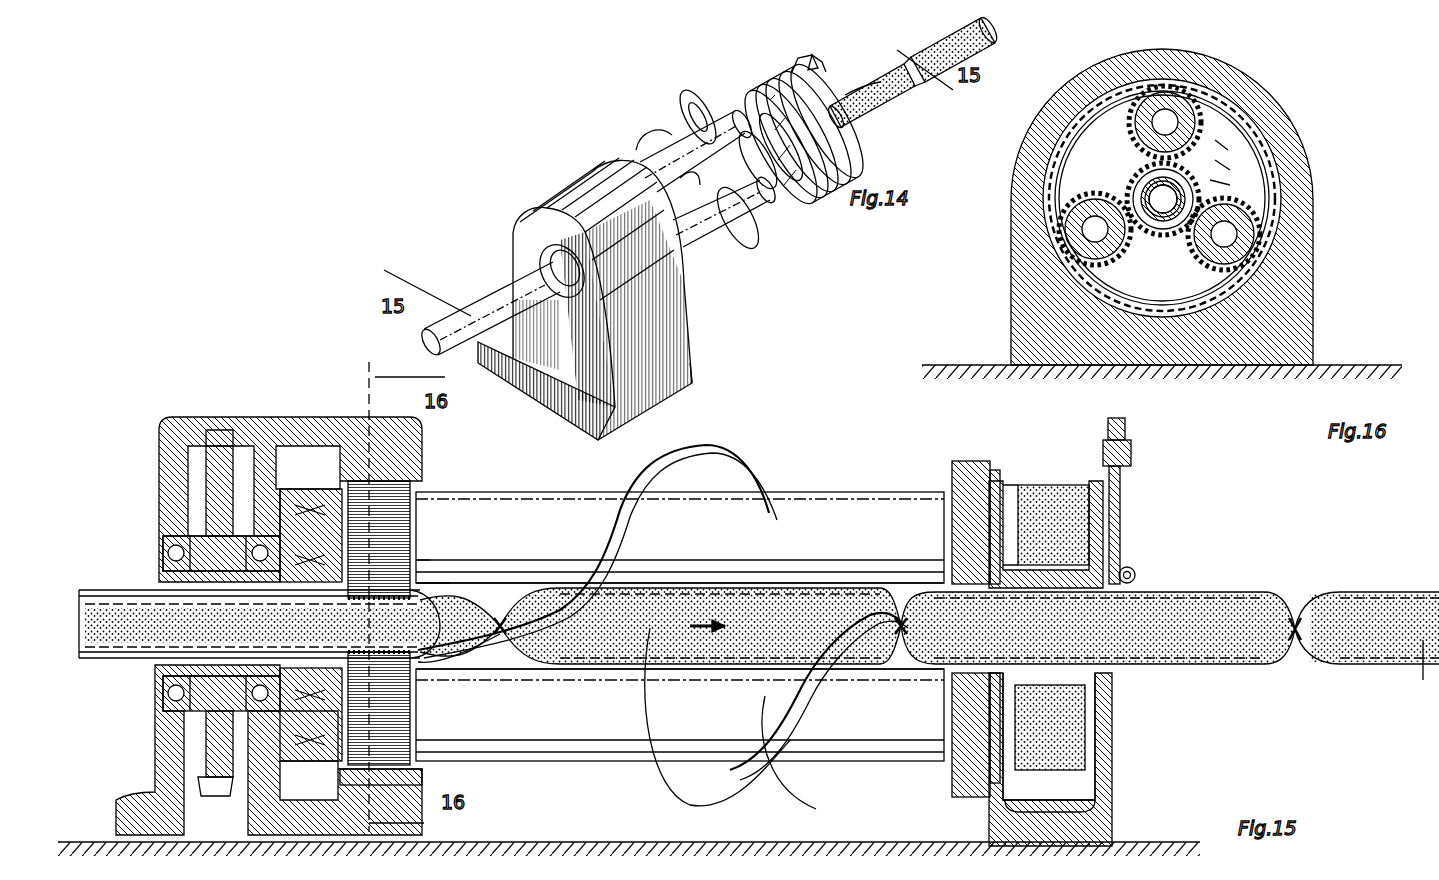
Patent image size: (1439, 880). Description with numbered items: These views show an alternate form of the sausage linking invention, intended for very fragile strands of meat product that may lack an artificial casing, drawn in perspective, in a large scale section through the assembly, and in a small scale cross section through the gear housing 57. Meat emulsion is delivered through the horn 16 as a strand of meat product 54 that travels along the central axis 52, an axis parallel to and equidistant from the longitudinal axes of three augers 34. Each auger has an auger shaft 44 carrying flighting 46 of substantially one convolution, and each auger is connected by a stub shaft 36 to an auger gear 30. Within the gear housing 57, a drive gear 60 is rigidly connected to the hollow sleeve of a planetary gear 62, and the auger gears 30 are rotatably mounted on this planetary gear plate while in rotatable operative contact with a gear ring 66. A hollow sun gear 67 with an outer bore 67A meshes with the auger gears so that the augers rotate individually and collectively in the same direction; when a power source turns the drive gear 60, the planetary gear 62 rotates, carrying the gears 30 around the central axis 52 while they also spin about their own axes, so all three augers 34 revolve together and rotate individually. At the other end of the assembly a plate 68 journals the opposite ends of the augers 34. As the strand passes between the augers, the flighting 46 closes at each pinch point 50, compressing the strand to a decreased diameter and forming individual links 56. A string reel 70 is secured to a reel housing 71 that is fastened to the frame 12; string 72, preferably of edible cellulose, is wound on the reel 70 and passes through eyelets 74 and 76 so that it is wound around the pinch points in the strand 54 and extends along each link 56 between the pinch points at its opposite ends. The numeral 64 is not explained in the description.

In FIG. 16, the frame 12 is at (1358, 365).
In FIG. 15, the frame 12 is at (1190, 842).
In FIG. 14, the horn 16 is at (520, 298).
In FIG. 16, the horn 16 is at (1190, 240).
In FIG. 15, the horn 16 is at (120, 610).
In FIG. 16, the auger gears 30 is at (1025, 140).
In FIG. 15, the auger gears 30 is at (410, 530).
In FIG. 14, the augers 34 is at (668, 103).
In FIG. 15, the augers 34 is at (868, 505).
In FIG. 16, the stub shaft 36 is at (1150, 100).
In FIG. 14, the auger shaft 44 is at (742, 225).
In FIG. 15, the auger shaft 44 is at (740, 480).
In FIG. 14, the flighting 46 is at (728, 245).
In FIG. 15, the flighting 46 is at (745, 500).
In FIG. 14, the pinch point 50 is at (935, 72).
In FIG. 15, the pinch point 50 is at (1340, 600).
In FIG. 15, the central axis 52 is at (582, 772).
In FIG. 14, the strand of meat product 54 is at (868, 100).
In FIG. 15, the strand of meat product 54 is at (470, 700).
In FIG. 15, the links 56 is at (1290, 605).
In FIG. 14, the gear housing 57 is at (522, 231).
In FIG. 16, the gear housing 57 is at (1296, 113).
In FIG. 15, the gear housing 57 is at (205, 418).
In FIG. 15, the drive gear 60 is at (160, 420).
In FIG. 16, the planetary gear 62 is at (1250, 152).
In FIG. 15, the planetary gear 62 is at (300, 489).
In FIG. 14, the bearing 64 is at (533, 250).
In FIG. 15, the bearing 64 is at (163, 590).
In FIG. 16, the gear ring 66 is at (1245, 112).
In FIG. 15, the gear ring 66 is at (390, 505).
In FIG. 16, the hollow sun gear 67 is at (1248, 167).
In FIG. 15, the hollow sun gear 67 is at (430, 560).
In FIG. 16, the outer bore 67A is at (1252, 178).
In FIG. 15, the outer bore 67A is at (450, 585).
In FIG. 14, the plate 68 is at (694, 108).
In FIG. 15, the plate 68 is at (978, 480).
In FIG. 14, the string reel 70 is at (758, 58).
In FIG. 15, the string reel 70 is at (1020, 480).
In FIG. 15, the reel housing 71 is at (1112, 760).
In FIG. 14, the string 72 is at (900, 60).
In FIG. 15, the string 72 is at (1120, 540).
In FIG. 14, the eyelet 74 is at (800, 55).
In FIG. 15, the eyelet 74 is at (1130, 440).
In FIG. 15, the eyelet 76 is at (1134, 575).